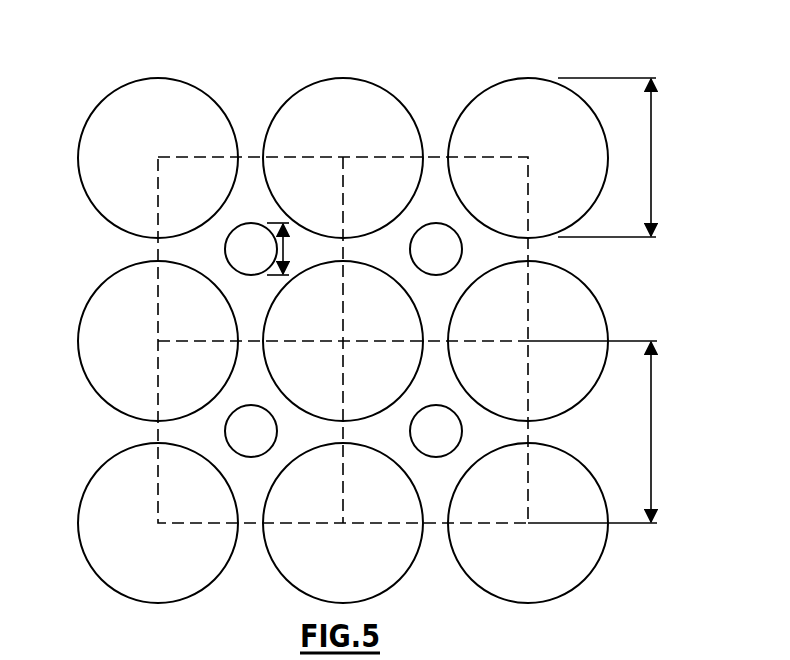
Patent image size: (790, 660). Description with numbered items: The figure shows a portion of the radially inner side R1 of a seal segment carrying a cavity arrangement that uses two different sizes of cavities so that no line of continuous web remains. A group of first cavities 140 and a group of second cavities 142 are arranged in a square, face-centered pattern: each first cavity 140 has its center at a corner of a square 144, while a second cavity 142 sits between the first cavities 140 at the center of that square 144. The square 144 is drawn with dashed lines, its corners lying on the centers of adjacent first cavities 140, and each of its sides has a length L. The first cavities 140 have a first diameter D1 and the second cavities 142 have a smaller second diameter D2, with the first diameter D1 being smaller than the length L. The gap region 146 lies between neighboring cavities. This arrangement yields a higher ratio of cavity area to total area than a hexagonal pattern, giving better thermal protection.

The first cavities 140 is at (483, 113).
The second cavities 142 is at (447, 250).
The square 144 is at (157, 253).
The gap between large feature and small feature 146 is at (434, 485).
The radially inner side R1 is at (136, 60).
The first diameter D1 is at (651, 158).
The second diameter D2 is at (288, 251).
The length L is at (651, 428).